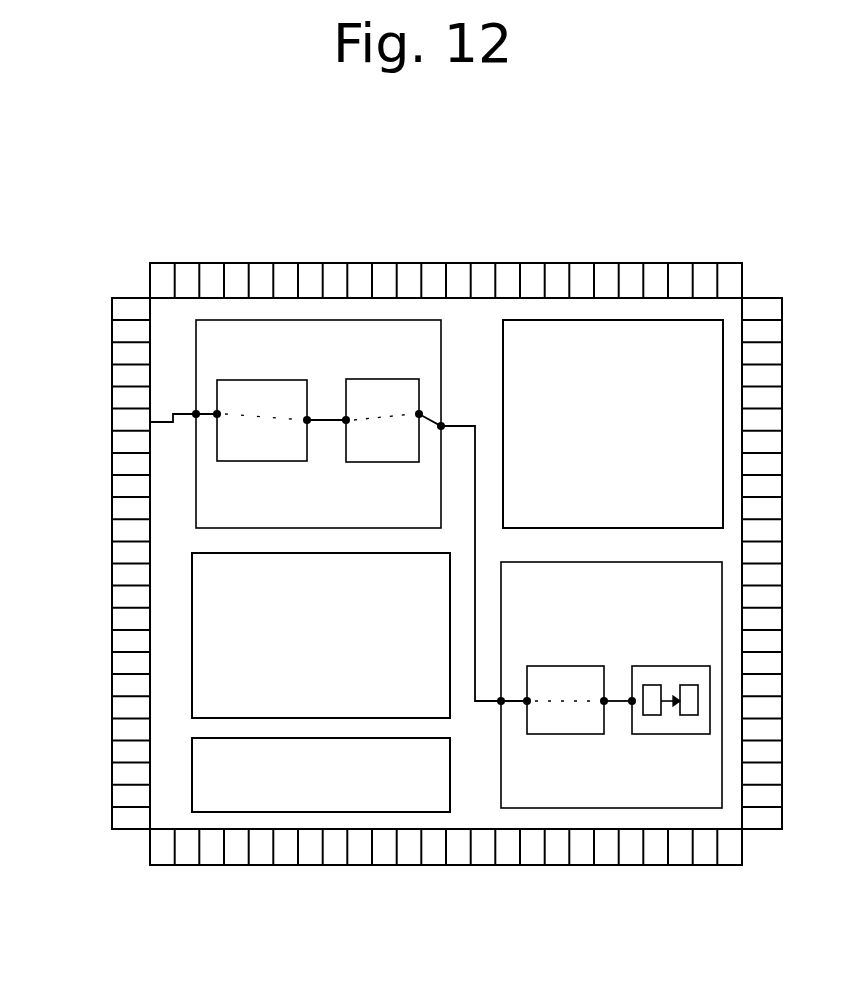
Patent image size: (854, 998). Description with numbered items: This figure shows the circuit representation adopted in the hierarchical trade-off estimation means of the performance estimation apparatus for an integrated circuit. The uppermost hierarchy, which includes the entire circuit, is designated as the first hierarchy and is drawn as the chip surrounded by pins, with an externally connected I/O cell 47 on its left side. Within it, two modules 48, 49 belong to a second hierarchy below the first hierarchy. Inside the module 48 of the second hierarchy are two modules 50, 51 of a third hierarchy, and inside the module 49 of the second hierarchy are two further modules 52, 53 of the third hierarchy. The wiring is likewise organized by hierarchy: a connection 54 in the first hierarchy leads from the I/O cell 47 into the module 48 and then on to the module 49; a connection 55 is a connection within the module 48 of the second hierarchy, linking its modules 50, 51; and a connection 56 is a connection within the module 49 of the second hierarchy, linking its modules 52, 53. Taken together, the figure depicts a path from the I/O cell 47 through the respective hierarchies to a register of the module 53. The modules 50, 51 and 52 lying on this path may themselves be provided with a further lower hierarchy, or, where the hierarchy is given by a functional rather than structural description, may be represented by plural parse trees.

The I/O cell 47 is at (112, 439).
The module in a second hierarchy 48 is at (441, 372).
The module in a second hierarchy 49 is at (577, 562).
The module of a third hierarchy 50 is at (270, 380).
The module of a third hierarchy 51 is at (387, 379).
The module in the third hierarchy 52 is at (560, 666).
The module in the third hierarchy 53 is at (663, 666).
The connection in the first hierarchy 54 is at (173, 425).
The connection in the module 48 55 is at (206, 416).
The connection in the module 49 56 is at (510, 705).